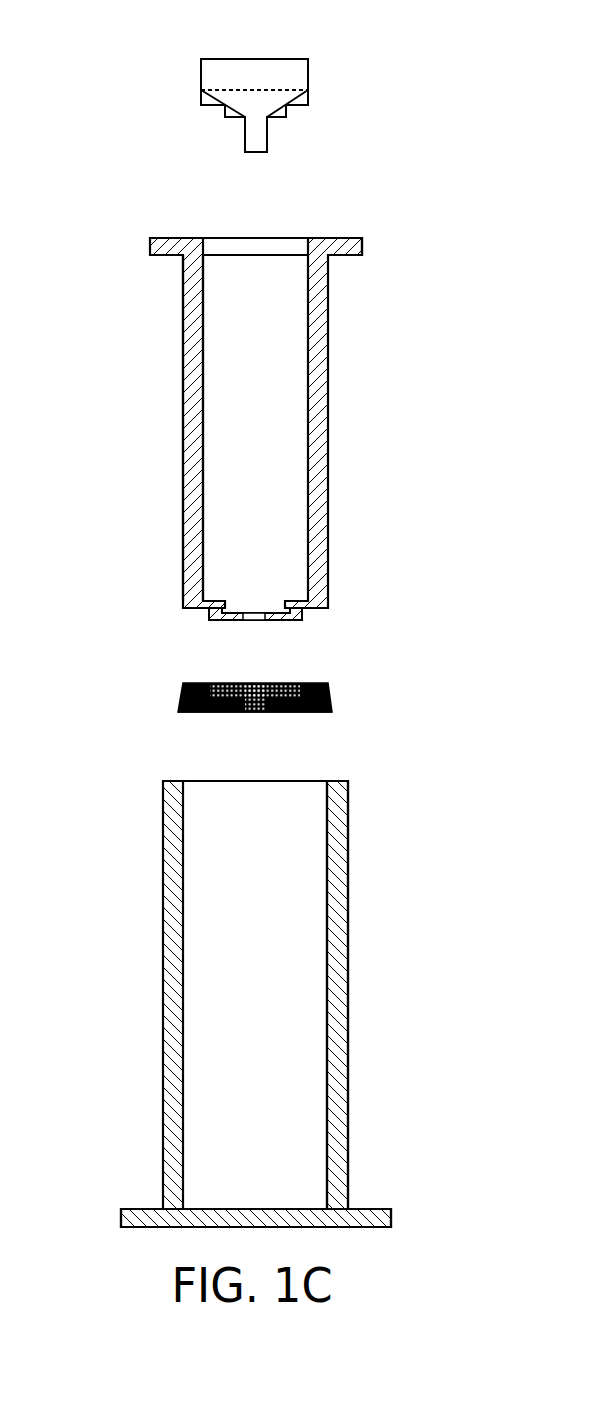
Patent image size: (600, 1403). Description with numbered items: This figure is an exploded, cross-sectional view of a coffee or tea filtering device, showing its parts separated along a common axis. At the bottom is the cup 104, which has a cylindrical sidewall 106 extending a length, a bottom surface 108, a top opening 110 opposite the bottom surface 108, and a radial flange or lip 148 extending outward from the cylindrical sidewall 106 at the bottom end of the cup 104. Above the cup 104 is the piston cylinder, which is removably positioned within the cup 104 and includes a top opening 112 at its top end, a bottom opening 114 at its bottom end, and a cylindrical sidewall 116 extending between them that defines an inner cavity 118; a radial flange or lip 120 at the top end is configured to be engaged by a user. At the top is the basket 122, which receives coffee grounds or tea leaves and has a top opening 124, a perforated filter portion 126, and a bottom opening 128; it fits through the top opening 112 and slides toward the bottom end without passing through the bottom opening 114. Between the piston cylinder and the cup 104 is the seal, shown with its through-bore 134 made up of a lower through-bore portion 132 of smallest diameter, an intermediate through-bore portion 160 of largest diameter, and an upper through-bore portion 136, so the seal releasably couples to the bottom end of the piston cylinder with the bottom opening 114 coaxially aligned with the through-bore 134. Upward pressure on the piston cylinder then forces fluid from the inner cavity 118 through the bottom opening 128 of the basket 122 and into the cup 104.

The cup 104 is at (140, 972).
The cylindrical sidewall 106 is at (335, 947).
The bottom surface 108 is at (237, 1218).
The top opening 110 is at (234, 775).
The top opening 112 is at (236, 240).
The bottom opening 114 is at (255, 600).
The cylindrical sidewall 116 is at (197, 385).
The inner cavity 118 is at (236, 357).
The radial flange or lip 120 is at (170, 243).
The basket 122 is at (190, 48).
The top opening 124 is at (240, 50).
The perforated filter portion 126 is at (282, 90).
The bottom opening 128 is at (262, 168).
The lower through-bore portion 132 is at (260, 712).
The through-bore 134 is at (258, 735).
The upper through-bore portion 136 is at (288, 683).
The radial flange or lip 148 is at (140, 1218).
The intermediate through-bore portion 160 is at (215, 683).